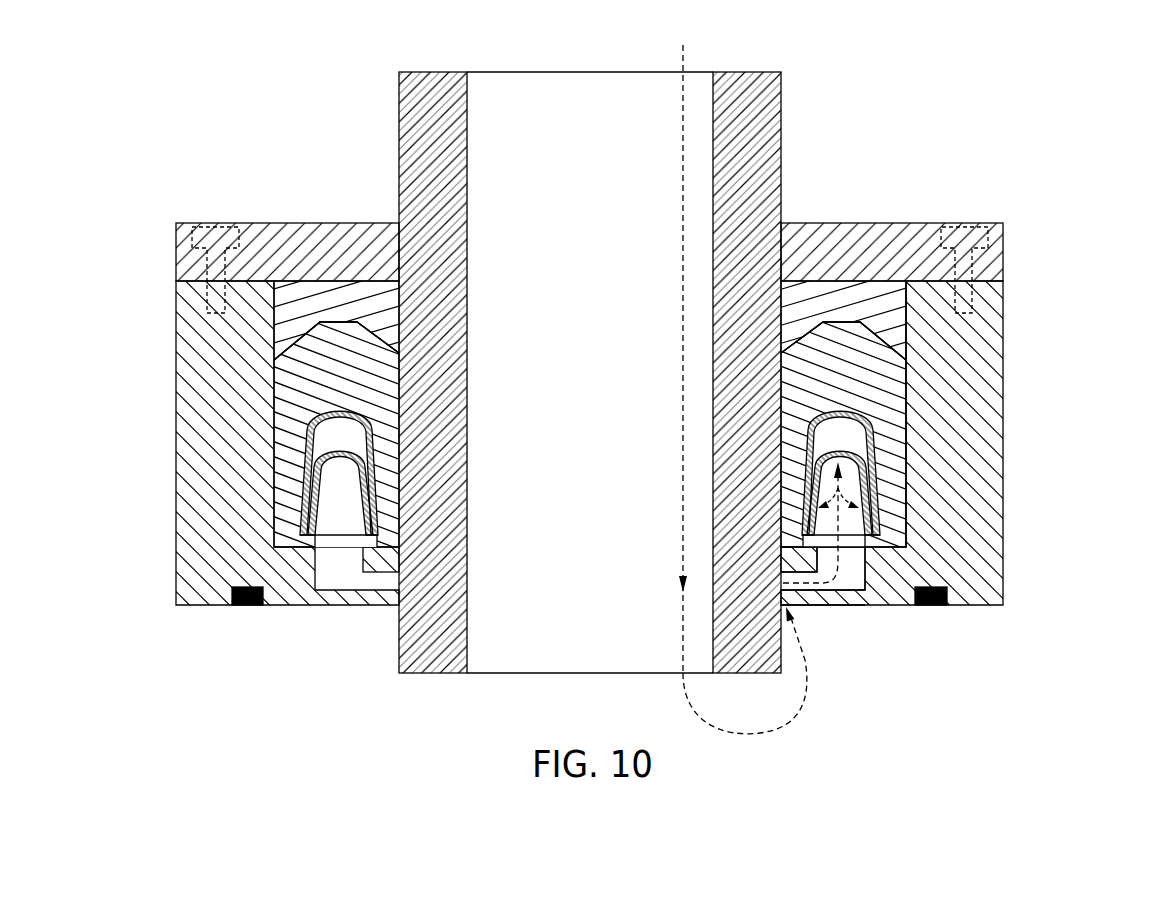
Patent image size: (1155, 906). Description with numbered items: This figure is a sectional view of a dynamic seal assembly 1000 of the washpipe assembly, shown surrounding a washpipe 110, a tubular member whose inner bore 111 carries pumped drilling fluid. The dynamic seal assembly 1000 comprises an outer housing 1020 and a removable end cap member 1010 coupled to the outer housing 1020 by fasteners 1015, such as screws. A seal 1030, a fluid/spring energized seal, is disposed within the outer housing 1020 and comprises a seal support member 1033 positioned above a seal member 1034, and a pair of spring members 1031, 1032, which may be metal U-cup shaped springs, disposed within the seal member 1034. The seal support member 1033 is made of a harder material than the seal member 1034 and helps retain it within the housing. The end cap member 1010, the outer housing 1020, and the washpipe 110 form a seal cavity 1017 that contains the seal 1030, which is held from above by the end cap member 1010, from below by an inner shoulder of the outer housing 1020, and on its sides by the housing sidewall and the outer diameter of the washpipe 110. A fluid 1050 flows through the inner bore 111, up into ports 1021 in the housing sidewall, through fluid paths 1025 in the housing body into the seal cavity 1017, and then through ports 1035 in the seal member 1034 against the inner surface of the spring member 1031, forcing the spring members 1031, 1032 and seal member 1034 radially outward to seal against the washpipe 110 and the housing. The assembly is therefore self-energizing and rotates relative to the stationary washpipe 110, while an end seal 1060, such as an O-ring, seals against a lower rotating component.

The washpipe 110 is at (782, 108).
The inner bore 111 is at (467, 104).
The dynamic seal assembly 1000 is at (1020, 88).
The end cap member 1010 is at (1003, 241).
The fasteners 1015 is at (197, 235).
The seal cavity 1017 is at (906, 341).
The outer housing 1020 is at (1003, 315).
The ports 1021 is at (797, 605).
The fluid paths 1025 is at (860, 605).
The seal 1030 is at (890, 368).
The spring member 1031 is at (866, 483).
The spring member 1032 is at (874, 449).
The seal support member 1033 is at (880, 302).
The seal member 1034 is at (827, 365).
The ports 1035 is at (862, 527).
The fluid 1050 is at (870, 553).
The end seal 1060 is at (935, 605).